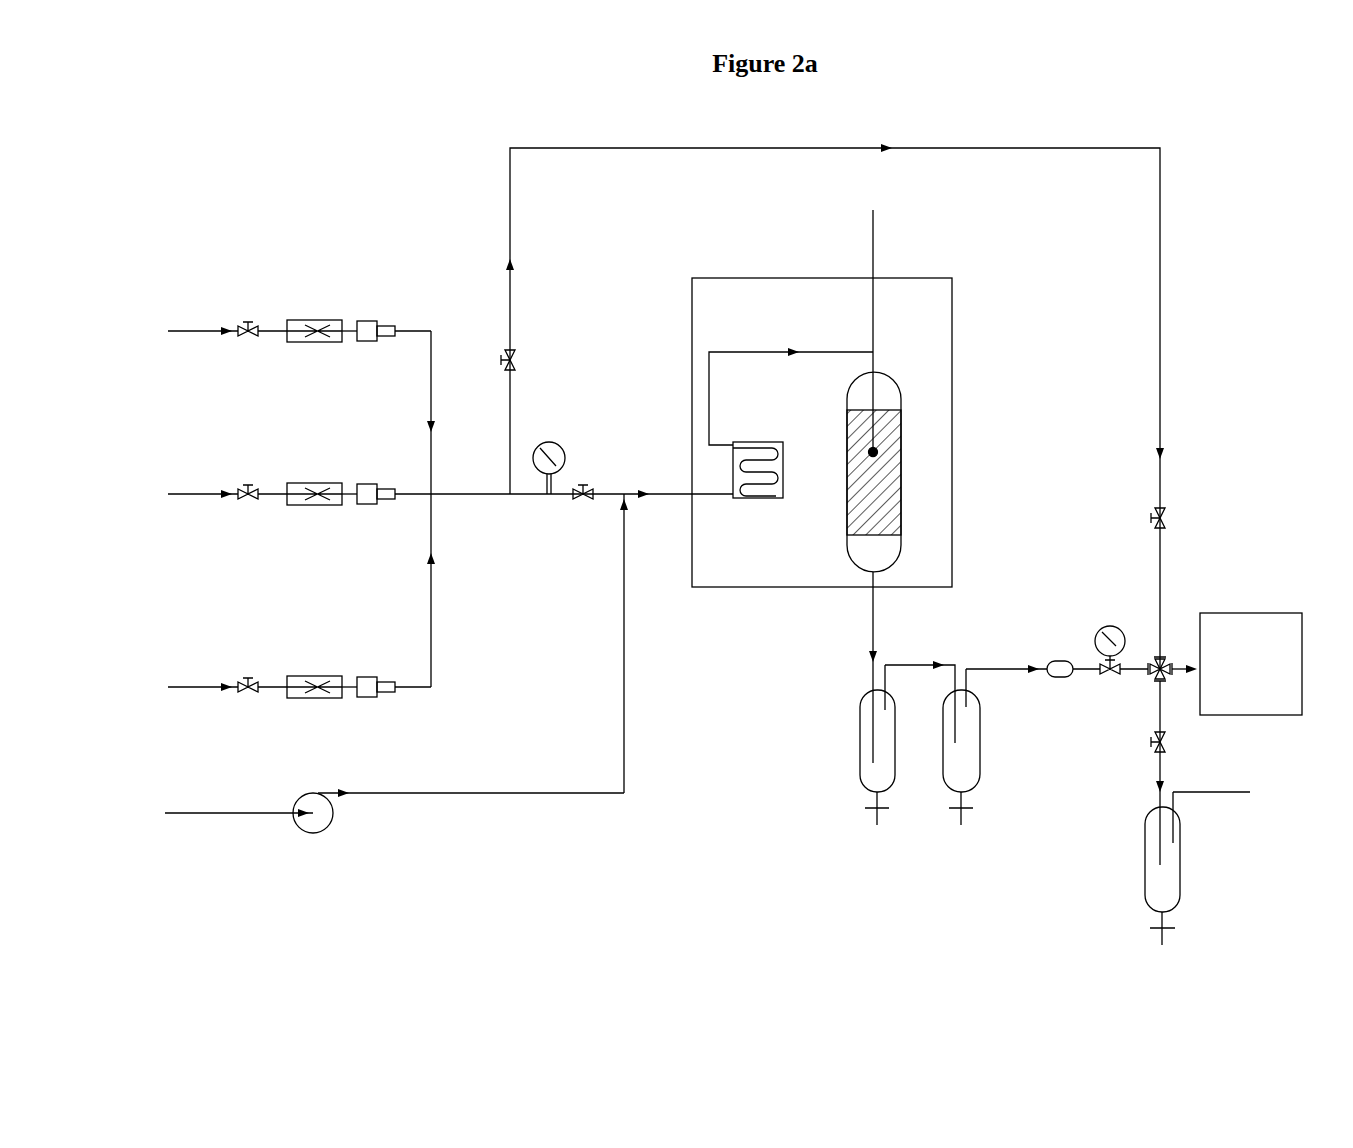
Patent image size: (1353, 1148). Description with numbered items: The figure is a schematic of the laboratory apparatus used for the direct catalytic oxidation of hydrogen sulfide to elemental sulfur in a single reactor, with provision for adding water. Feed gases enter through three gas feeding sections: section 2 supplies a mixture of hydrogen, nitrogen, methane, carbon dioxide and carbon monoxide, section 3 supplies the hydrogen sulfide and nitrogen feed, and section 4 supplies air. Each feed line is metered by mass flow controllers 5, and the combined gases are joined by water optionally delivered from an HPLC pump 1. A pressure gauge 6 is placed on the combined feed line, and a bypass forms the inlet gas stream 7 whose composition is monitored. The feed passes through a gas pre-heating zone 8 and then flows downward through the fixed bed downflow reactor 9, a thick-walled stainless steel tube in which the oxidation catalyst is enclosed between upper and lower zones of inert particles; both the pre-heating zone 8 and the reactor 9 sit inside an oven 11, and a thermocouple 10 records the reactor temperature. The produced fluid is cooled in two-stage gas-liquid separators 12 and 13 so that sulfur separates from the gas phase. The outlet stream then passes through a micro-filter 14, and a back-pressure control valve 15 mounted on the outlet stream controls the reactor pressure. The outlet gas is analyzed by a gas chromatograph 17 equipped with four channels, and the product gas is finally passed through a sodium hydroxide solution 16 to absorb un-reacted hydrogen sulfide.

The HPLC pump 1 is at (394, 688).
The gas feeding section 2 is at (279, 687).
The gas feeding section 3 is at (279, 494).
The gas feeding section 4 is at (279, 331).
The mass flow controllers 5 is at (341, 525).
The pressure gauge 6 is at (549, 448).
The inlet gas stream 7 is at (833, 406).
The gas pre-heating zone 8 is at (791, 450).
The downflow reactor 9 is at (874, 567).
The thermocouple 10 is at (855, 333).
The oven 11 is at (822, 432).
The gas-liquid separator 12 is at (887, 743).
The gas-liquid separator 13 is at (995, 745).
The micro-filter 14 is at (1095, 654).
The back-pressure control valve 15 is at (1110, 636).
The sodium hydroxide solution 16 is at (1197, 813).
The gas chromatograph 17 is at (1251, 664).